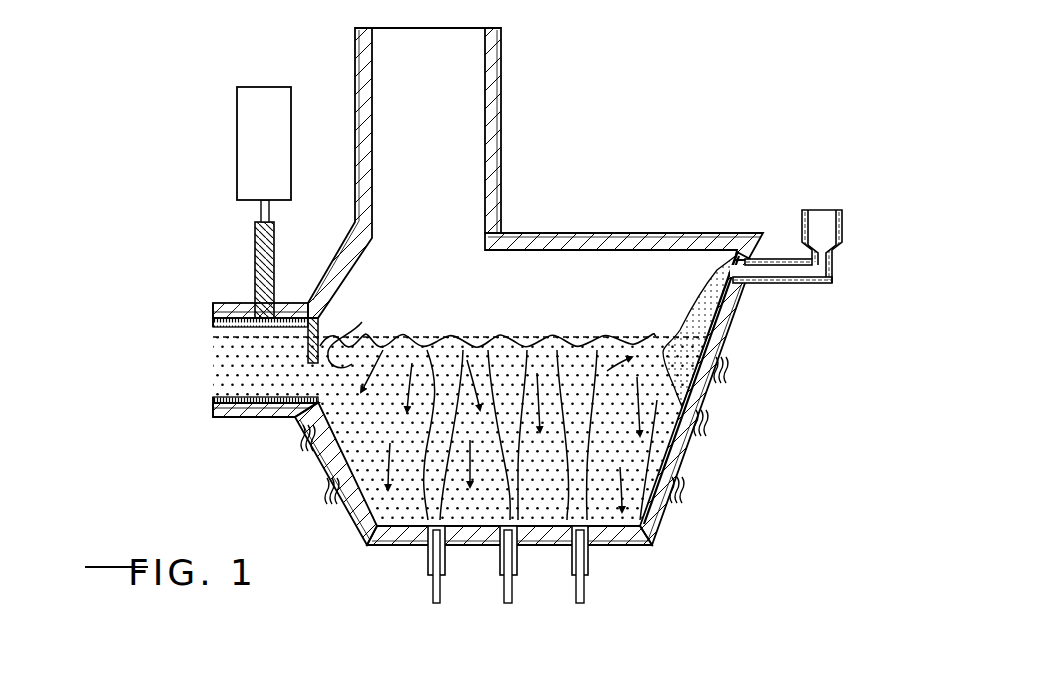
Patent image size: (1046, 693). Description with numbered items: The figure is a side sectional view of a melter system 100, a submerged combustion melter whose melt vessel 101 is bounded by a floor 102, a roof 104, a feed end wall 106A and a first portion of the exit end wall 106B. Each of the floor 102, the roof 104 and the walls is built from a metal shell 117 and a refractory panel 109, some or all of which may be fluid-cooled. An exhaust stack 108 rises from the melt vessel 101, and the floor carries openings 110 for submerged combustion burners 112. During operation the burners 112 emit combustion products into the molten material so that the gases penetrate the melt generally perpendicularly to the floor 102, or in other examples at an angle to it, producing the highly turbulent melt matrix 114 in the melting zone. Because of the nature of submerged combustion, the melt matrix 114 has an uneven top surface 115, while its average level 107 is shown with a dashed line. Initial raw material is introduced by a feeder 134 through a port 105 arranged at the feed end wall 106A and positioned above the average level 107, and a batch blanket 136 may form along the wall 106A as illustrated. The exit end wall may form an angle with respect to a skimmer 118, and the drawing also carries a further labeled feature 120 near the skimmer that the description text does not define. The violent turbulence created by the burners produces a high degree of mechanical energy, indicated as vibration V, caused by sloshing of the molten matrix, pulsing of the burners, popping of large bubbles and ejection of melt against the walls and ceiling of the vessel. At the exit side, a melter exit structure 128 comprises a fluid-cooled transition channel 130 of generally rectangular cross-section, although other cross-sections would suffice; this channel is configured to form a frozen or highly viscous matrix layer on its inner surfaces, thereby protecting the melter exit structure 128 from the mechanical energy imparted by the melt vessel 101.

The melter system 100 is at (708, 108).
The melt vessel 101 is at (714, 345).
The floor 102 is at (472, 547).
The roof 104 is at (541, 232).
The port 105 is at (722, 285).
The feed end wall 106A is at (707, 388).
The first portion of the exit end wall 106B is at (326, 466).
The average level 107 is at (588, 330).
The exhaust stack 108 is at (502, 88).
The refractory panel 109 is at (213, 308).
The openings 110 is at (427, 556).
The submerged combustion burners 112 is at (432, 593).
The melt matrix 114 is at (647, 366).
The top surface 115 is at (536, 333).
The metal shell 117 is at (230, 303).
The skimmer 118 is at (357, 340).
The incoming melt flow 120 is at (365, 345).
The melter exit structure 128 is at (165, 284).
The fluid-cooled transition channel 130 is at (248, 417).
The feeder 134 is at (843, 217).
The batch blanket 136 is at (707, 308).
The vibration V is at (724, 372).